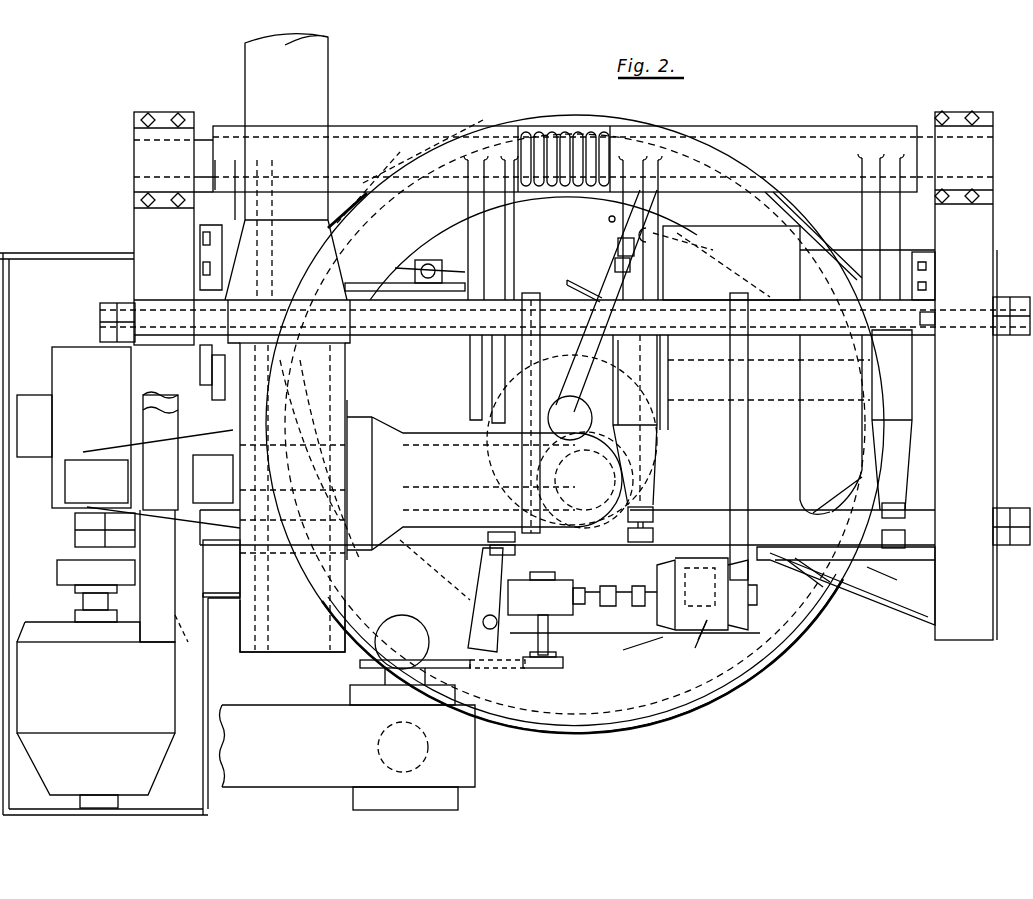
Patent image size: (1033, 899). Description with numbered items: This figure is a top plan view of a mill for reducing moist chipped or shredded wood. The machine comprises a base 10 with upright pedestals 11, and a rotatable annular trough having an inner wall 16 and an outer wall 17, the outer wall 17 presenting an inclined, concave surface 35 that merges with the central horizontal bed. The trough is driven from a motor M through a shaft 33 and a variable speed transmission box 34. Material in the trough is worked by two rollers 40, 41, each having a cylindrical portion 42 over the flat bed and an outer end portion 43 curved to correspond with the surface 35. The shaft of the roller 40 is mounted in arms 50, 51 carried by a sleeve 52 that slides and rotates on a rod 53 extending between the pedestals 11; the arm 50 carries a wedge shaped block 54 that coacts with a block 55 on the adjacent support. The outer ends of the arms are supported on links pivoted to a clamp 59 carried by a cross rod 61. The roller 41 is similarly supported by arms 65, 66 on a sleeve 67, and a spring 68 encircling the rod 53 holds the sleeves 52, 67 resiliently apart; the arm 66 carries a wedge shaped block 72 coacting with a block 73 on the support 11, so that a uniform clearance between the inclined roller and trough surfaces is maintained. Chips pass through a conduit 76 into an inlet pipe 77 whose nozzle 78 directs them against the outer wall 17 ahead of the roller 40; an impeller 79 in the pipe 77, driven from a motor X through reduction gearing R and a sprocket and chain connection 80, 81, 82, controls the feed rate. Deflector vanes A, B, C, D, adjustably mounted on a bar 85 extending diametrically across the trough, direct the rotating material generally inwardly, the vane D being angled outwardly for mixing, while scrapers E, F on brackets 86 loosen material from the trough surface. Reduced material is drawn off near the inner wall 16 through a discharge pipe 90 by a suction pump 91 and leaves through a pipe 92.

The base 10 is at (885, 600).
The upright portions or pedestals 11 is at (134, 214).
The inner wall 16 is at (545, 300).
The outer wall 17 is at (527, 125).
The shaft 33 is at (78, 527).
The variable speed transmission box 34 is at (65, 350).
The inclined or curved concave surface 35 is at (762, 668).
The roller 40 is at (537, 390).
The roller 41 is at (617, 248).
The cylindrical portion 42 is at (380, 282).
The outer end portion 43 is at (280, 346).
The arm 50 is at (200, 262).
The arm 51 is at (450, 217).
The sleeve 52 is at (395, 126).
The rod 53 is at (207, 140).
The wedge shaped or inclined block 54 is at (204, 370).
The block 55 is at (212, 390).
The clamp 59 is at (236, 553).
The cross rod 61 is at (700, 508).
The arm 65 is at (614, 266).
The arm 66 is at (908, 283).
The sleeve 67 is at (813, 126).
The spring 68 is at (572, 130).
The wedge shaped block 72 is at (892, 420).
The block 73 is at (937, 326).
The conduit 76 is at (253, 710).
The inlet pipe 77 is at (410, 646).
The discharge end or nozzle 78 is at (292, 625).
The impeller 79 is at (455, 798).
The sprocket and chain connection 80 is at (545, 670).
The sprocket and chain connection 81 is at (500, 670).
The sprocket and chain connection 82 is at (352, 665).
The bar 85 is at (595, 388).
The bracket 86 is at (855, 598).
The discharge pipe 90 is at (628, 525).
The suction pump 91 is at (343, 390).
The pipe 92 is at (314, 88).
The deflector vane A is at (450, 590).
The deflector vane B is at (615, 585).
The deflector vane C is at (571, 280).
The deflector vane D is at (609, 219).
The scraper E is at (451, 268).
The scraper F is at (579, 401).
The motor M is at (96, 684).
The reduction gearing R is at (565, 606).
The motor X is at (698, 640).